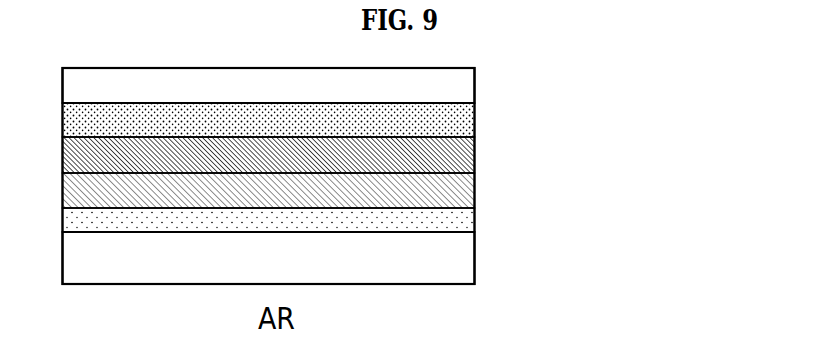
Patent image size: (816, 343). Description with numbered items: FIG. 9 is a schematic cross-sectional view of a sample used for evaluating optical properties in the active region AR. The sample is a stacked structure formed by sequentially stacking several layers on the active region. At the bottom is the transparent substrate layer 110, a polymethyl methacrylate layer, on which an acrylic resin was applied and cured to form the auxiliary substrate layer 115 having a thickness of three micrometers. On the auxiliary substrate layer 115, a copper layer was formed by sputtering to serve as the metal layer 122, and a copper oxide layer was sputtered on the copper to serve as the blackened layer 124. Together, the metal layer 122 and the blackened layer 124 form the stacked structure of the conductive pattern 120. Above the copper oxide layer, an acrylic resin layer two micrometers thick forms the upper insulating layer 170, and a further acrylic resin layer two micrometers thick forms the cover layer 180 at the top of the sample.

The cover layer 180 is at (467, 85).
The upper insulating layer 170 is at (467, 121).
The blackened layer 124 is at (471, 160).
The metal layer 122 is at (467, 198).
The conductive pattern 120 is at (634, 143).
The auxiliary substrate layer 115 is at (467, 229).
The transparent substrate layer 110 is at (467, 268).